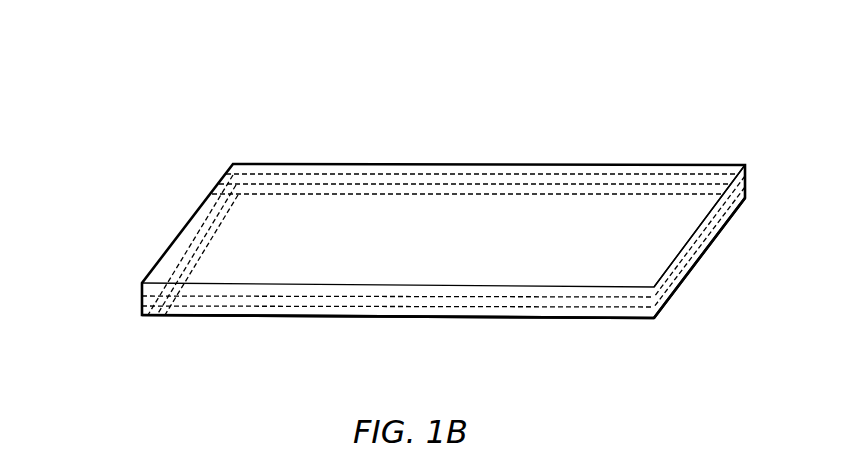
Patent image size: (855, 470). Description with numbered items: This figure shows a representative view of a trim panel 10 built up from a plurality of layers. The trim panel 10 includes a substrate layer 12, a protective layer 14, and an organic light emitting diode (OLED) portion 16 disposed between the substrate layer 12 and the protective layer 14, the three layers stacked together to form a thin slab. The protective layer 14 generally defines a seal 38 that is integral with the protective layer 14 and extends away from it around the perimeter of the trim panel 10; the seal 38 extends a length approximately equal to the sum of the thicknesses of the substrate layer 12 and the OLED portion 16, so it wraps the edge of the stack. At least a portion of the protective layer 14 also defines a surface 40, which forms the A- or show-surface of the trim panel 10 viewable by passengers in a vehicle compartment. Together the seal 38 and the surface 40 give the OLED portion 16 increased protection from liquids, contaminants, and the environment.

The trim panel 10 is at (271, 97).
The substrate layer 12 is at (129, 314).
The protective layer 14 is at (236, 220).
The organic light emitting diode (OLED) portion 16 is at (129, 298).
The seal 38 is at (680, 263).
The surface 40 is at (447, 245).